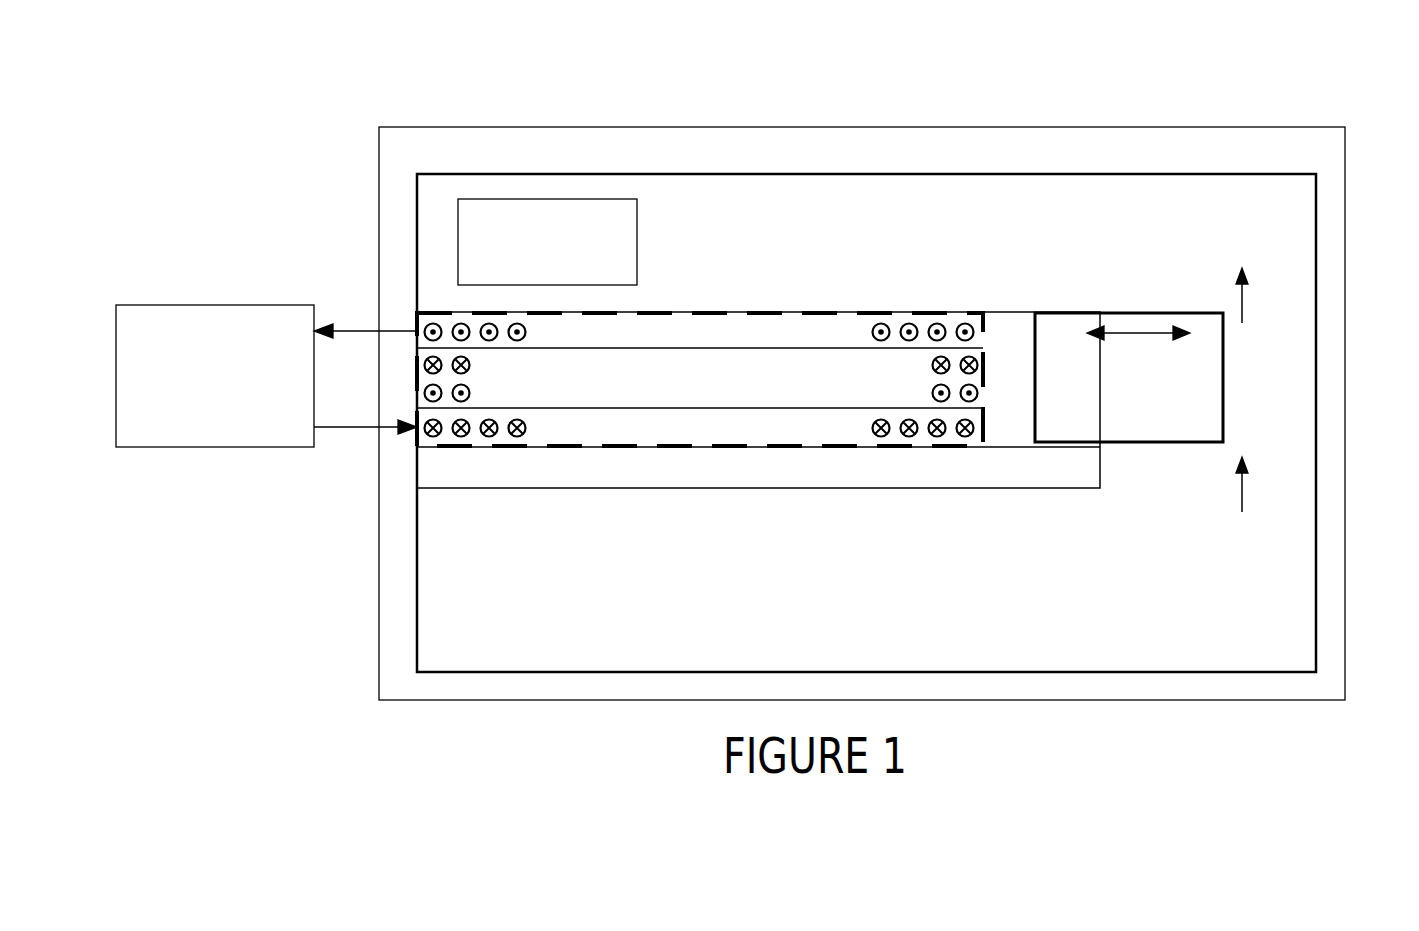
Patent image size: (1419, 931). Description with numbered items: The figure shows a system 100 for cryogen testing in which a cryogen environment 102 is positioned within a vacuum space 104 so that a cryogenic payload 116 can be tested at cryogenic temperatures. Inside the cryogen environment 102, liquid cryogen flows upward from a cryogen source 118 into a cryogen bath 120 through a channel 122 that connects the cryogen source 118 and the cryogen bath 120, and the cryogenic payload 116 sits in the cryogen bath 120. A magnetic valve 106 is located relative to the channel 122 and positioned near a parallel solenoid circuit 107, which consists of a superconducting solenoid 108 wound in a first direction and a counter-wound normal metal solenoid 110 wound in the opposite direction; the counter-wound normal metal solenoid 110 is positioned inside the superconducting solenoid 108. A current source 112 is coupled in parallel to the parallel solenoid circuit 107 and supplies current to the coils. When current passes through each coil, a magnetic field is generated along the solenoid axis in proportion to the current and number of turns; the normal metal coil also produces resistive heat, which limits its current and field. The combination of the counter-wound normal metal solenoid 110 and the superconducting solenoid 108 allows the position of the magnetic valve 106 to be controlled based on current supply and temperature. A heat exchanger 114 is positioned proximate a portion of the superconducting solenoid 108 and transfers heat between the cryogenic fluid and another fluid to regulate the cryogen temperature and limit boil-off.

The system 100 is at (313, 115).
The cryogen environment 102 is at (1157, 173).
The vacuum space 104 is at (1092, 125).
The magnetic valve 106 is at (1130, 313).
The parallel solenoid circuit 107 is at (813, 312).
The superconducting solenoid 108 is at (984, 441).
The counter-wound normal metal solenoid 110 is at (985, 363).
The current source 112 is at (153, 303).
The heat exchanger 114 is at (877, 488).
The cryogenic payload 116 is at (637, 238).
The cryogen source 118 is at (490, 595).
The cryogen bath 120 is at (760, 202).
The channel 122 is at (1308, 417).